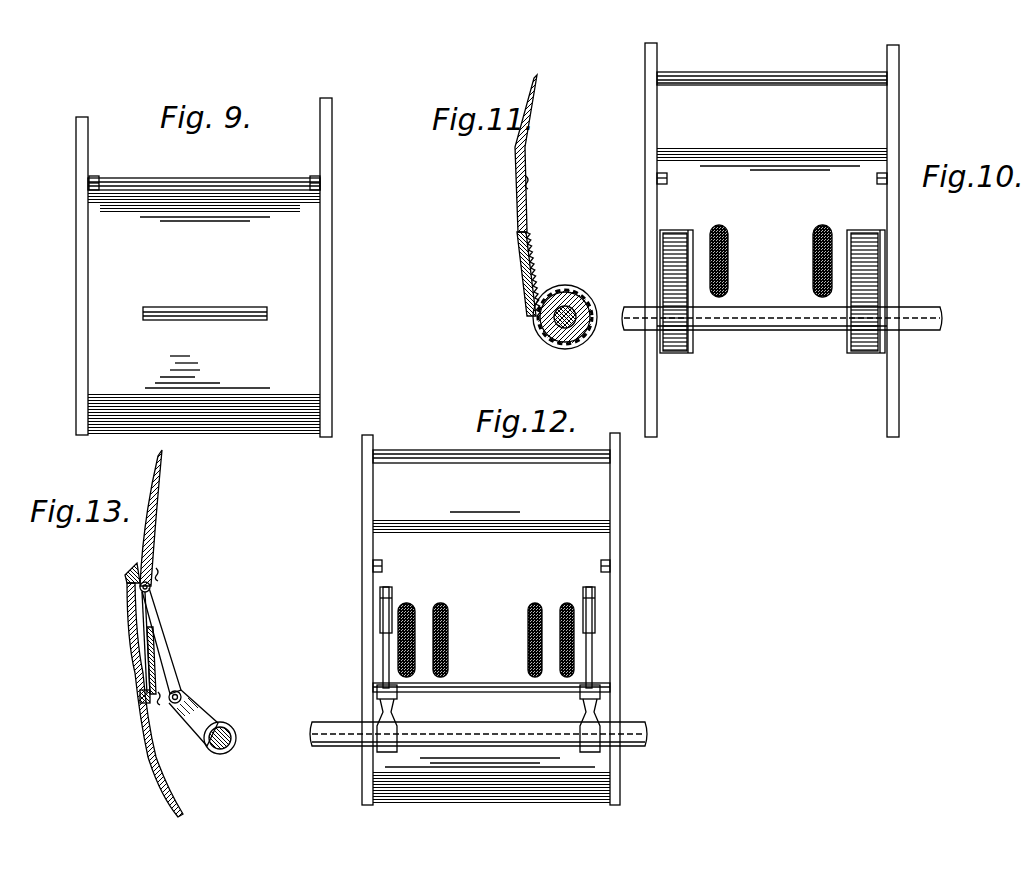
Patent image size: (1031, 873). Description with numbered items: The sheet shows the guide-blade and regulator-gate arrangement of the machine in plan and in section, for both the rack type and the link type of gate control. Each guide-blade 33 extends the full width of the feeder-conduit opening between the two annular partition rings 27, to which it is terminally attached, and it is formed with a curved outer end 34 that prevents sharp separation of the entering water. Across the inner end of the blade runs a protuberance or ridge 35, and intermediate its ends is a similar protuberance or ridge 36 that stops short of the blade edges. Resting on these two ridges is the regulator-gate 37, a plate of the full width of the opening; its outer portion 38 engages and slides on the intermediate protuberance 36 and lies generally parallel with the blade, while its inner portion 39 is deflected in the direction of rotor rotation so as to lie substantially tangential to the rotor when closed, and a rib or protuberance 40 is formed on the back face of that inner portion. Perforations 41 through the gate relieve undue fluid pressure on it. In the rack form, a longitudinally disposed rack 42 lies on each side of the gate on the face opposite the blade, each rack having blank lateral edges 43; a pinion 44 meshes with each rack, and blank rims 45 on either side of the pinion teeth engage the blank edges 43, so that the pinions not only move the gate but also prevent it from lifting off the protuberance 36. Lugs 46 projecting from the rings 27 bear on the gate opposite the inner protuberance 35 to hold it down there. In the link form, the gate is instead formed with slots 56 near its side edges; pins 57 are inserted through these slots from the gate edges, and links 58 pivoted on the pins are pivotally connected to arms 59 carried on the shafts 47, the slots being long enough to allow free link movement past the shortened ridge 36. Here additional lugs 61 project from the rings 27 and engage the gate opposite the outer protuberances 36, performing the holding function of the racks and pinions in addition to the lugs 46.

In FIG. 9, the annular partition abutment ring 27 is at (76, 305).
In FIG. 10, the annular partition abutment ring 27 is at (645, 185).
In FIG. 12, the annular partition abutment ring 27 is at (362, 533).
In FIG. 9, the guide-blade 33 is at (212, 266).
In FIG. 13, the guide-blade 33 is at (134, 668).
In FIG. 9, the curved outer end 34 is at (204, 395).
In FIG. 12, the curved outer end 34 is at (585, 765).
In FIG. 13, the curved outer end 34 is at (166, 801).
In FIG. 9, the inner protuberance or ridge 35 is at (232, 178).
In FIG. 13, the inner protuberance or ridge 35 is at (126, 579).
In FIG. 9, the intermediate protuberance or ridge 36 is at (204, 308).
In FIG. 13, the intermediate protuberance or ridge 36 is at (140, 698).
In FIG. 11, the regulator-gate 37 is at (528, 205).
In FIG. 10, the regulator-gate 37 is at (762, 208).
In FIG. 12, the regulator-gate 37 is at (486, 596).
In FIG. 13, the regulator-gate 37 is at (155, 536).
In FIG. 11, the outer portion of gate 38 is at (522, 278).
In FIG. 13, the outer portion of gate 38 is at (147, 651).
In FIG. 11, the inner portion of gate 39 is at (539, 97).
In FIG. 10, the inner portion of gate 39 is at (775, 80).
In FIG. 12, the inner portion of gate 39 is at (492, 458).
In FIG. 13, the inner portion of gate 39 is at (163, 468).
In FIG. 11, the rib or protuberance 40 is at (514, 168).
In FIG. 13, the rib or protuberance 40 is at (145, 530).
In FIG. 10, the perforation 41 is at (812, 272).
In FIG. 12, the perforation 41 is at (416, 650).
In FIG. 11, the rack 42 is at (536, 274).
In FIG. 10, the rack 42 is at (677, 232).
In FIG. 11, the blank longitudinal portion 43 is at (525, 316).
In FIG. 10, the blank longitudinal portion 43 is at (846, 236).
In FIG. 11, the pinion 44 is at (577, 299).
In FIG. 10, the pinion 44 is at (676, 353).
In FIG. 11, the blank rim 45 is at (591, 332).
In FIG. 10, the blank rim 45 is at (692, 351).
In FIG. 9, the lug 46 is at (100, 178).
In FIG. 11, the lug 46 is at (531, 181).
In FIG. 10, the lug 46 is at (668, 178).
In FIG. 12, the lug 46 is at (382, 566).
In FIG. 13, the lug 46 is at (161, 573).
In FIG. 11, the shaft 47 is at (587, 307).
In FIG. 10, the shaft 47 is at (785, 326).
In FIG. 12, the shaft 47 is at (480, 734).
In FIG. 13, the shaft 47 is at (223, 750).
In FIG. 12, the slot 56 is at (393, 591).
In FIG. 13, the slot 56 is at (146, 622).
In FIG. 12, the pin 57 is at (393, 598).
In FIG. 13, the pin 57 is at (151, 588).
In FIG. 12, the link 58 is at (383, 655).
In FIG. 13, the link 58 is at (167, 662).
In FIG. 12, the arm 59 is at (392, 722).
In FIG. 13, the arm 59 is at (206, 713).
In FIG. 12, the lug 61 is at (377, 691).
In FIG. 13, the lug 61 is at (159, 708).